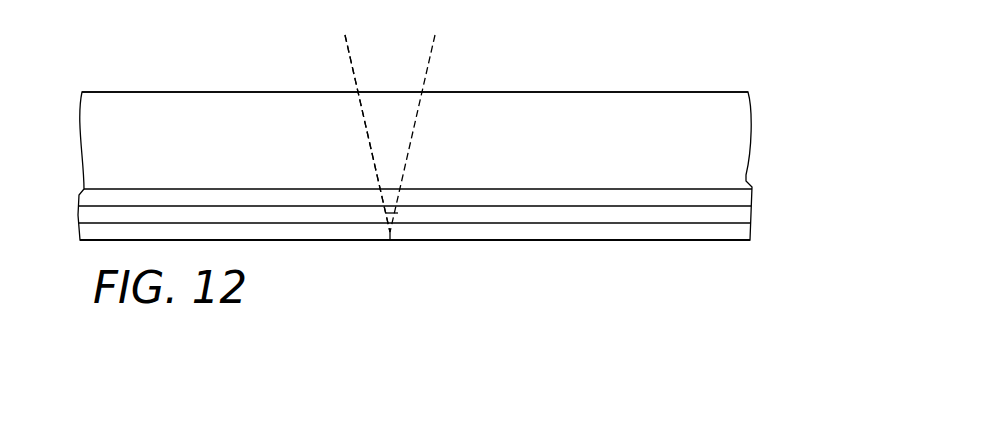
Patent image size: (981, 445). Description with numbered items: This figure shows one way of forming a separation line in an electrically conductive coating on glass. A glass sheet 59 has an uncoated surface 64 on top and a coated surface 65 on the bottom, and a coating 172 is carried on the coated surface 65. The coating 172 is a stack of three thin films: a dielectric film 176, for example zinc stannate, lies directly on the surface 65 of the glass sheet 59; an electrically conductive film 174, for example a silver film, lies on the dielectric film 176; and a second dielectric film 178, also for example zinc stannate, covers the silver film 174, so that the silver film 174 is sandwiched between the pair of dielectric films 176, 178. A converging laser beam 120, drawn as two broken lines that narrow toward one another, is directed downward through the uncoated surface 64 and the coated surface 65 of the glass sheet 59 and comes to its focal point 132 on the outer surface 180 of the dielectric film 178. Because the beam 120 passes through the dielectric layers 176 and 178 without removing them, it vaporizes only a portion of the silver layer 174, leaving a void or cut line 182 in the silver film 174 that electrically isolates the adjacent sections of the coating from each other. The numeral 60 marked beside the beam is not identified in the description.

The glass sheet 59 is at (772, 115).
The uncoated surface 64 is at (107, 92).
The coated surface 65 is at (88, 189).
The light beam 60 is at (372, 165).
The converging laser beam 120 is at (352, 70).
The cut line 182 is at (392, 213).
The focal point 132 is at (390, 240).
The outer surface 180 is at (525, 240).
The coating 172 is at (697, 252).
The dielectric film 176 is at (752, 196).
The electrically conductive film 174 is at (752, 217).
The dielectric film 178 is at (752, 232).